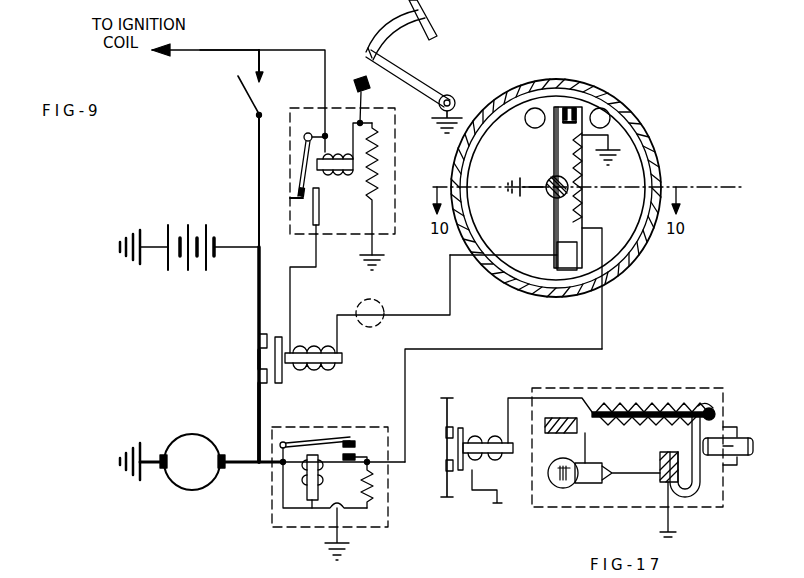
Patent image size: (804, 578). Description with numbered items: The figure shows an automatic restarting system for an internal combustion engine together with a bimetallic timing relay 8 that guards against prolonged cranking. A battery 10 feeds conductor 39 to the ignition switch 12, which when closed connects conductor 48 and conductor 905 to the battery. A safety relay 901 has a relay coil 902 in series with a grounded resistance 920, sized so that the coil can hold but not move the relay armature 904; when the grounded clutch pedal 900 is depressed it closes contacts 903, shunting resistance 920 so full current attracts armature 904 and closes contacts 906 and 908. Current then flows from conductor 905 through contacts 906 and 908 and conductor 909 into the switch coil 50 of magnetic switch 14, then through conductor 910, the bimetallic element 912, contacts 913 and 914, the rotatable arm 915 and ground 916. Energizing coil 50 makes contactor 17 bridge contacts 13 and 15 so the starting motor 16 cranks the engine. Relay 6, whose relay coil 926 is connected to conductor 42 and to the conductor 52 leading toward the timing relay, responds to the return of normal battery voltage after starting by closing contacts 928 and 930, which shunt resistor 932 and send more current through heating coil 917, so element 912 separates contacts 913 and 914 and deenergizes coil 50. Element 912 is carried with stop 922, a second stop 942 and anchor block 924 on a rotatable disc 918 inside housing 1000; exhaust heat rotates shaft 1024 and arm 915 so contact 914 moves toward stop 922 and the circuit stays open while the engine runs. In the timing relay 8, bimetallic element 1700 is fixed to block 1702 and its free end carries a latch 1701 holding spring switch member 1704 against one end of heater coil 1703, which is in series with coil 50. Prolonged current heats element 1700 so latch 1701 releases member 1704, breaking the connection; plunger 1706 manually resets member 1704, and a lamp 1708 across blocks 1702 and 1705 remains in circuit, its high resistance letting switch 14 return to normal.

In FIG. 9, the relay 6 is at (272, 512).
In FIG. 9, the bimetallic relay 8 is at (362, 326).
In FIG. 17, the bimetallic relay 8 is at (723, 490).
In FIG. 9, the battery 10 is at (178, 222).
In FIG. 9, the ignition switch 12 is at (246, 92).
In FIG. 9, the contact 13 is at (258, 340).
In FIG. 17, the contact 13 is at (445, 432).
In FIG. 9, the magnetic switch 14 is at (247, 356).
In FIG. 17, the magnetic switch 14 is at (498, 470).
In FIG. 9, the contact 15 is at (258, 376).
In FIG. 17, the contact 15 is at (445, 466).
In FIG. 9, the starting motor 16 is at (201, 462).
In FIG. 9, the contactor 17 is at (280, 384).
In FIG. 17, the contactor 17 is at (458, 448).
In FIG. 9, the conductor 39 is at (259, 170).
In FIG. 9, the conductor 42 is at (258, 426).
In FIG. 17, the conductor 42 is at (452, 490).
In FIG. 9, the conductor 48 is at (220, 50).
In FIG. 9, the switch coil 50 is at (300, 352).
In FIG. 17, the switch coil 50 is at (497, 438).
In FIG. 9, the conductor 52 is at (441, 349).
In FIG. 9, the clutch pedal 900 is at (426, 28).
In FIG. 9, the safety relay 901 is at (392, 140).
In FIG. 9, the relay coil 902 is at (344, 172).
In FIG. 9, the contacts 903 is at (366, 78).
In FIG. 9, the relay armature 904 is at (304, 148).
In FIG. 9, the conductor 905 is at (320, 52).
In FIG. 9, the contact 906 is at (294, 200).
In FIG. 9, the contact 908 is at (314, 208).
In FIG. 9, the conductor 909 is at (290, 284).
In FIG. 9, the conductor 910 is at (432, 316).
In FIG. 9, the bimetallic element 912 is at (580, 188).
In FIG. 9, the contact 913 is at (573, 108).
In FIG. 9, the contact 914 is at (565, 108).
In FIG. 9, the rotatable arm 915 is at (556, 162).
In FIG. 9, the ground 916 is at (512, 194).
In FIG. 9, the heating coil 917 is at (580, 210).
In FIG. 9, the rotatable disc 918 is at (632, 146).
In FIG. 9, the grounded resistance 920 is at (380, 160).
In FIG. 9, the stop 922 is at (528, 124).
In FIG. 9, the anchor block 924 is at (558, 244).
In FIG. 9, the relay coil 926 is at (318, 468).
In FIG. 9, the contact 928 is at (360, 432).
In FIG. 9, the contact 930 is at (360, 450).
In FIG. 9, the resistor 932 is at (382, 488).
In FIG. 9, the opening 942 is at (604, 116).
In FIG. 9, the housing 1000 is at (638, 258).
In FIG. 9, the second shaft 1024 is at (552, 196).
In FIG. 17, the bimetallic element 1700 is at (596, 420).
In FIG. 17, the latch 1701 is at (710, 420).
In FIG. 17, the block 1702 is at (546, 428).
In FIG. 17, the heater coil 1703 is at (634, 404).
In FIG. 17, the spring switch member 1704 is at (692, 440).
In FIG. 17, the block 1705 is at (662, 480).
In FIG. 17, the plunger 1706 is at (754, 448).
In FIG. 17, the lamp 1708 is at (568, 487).